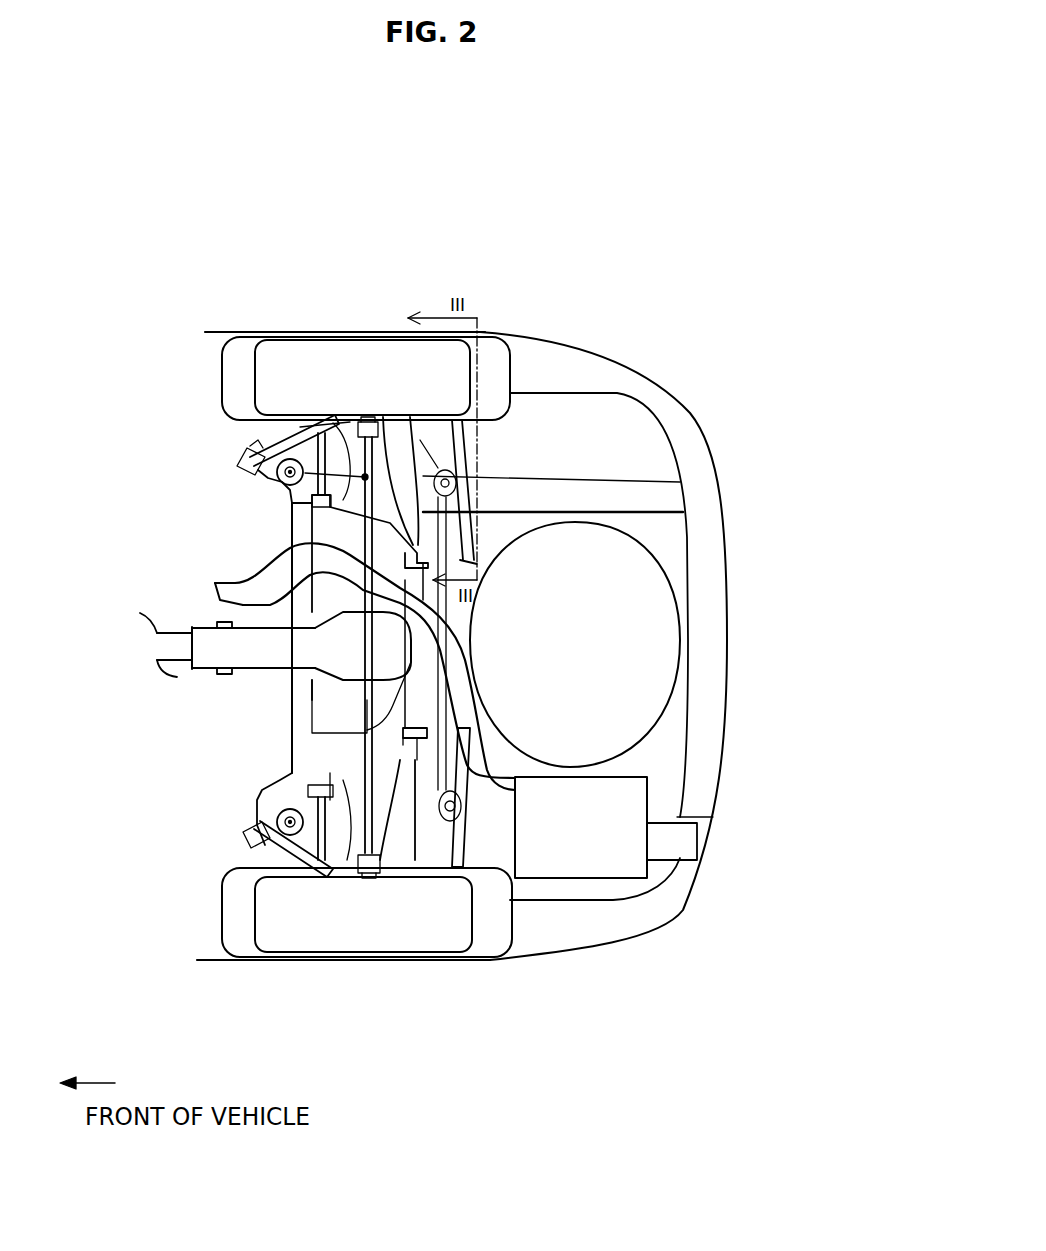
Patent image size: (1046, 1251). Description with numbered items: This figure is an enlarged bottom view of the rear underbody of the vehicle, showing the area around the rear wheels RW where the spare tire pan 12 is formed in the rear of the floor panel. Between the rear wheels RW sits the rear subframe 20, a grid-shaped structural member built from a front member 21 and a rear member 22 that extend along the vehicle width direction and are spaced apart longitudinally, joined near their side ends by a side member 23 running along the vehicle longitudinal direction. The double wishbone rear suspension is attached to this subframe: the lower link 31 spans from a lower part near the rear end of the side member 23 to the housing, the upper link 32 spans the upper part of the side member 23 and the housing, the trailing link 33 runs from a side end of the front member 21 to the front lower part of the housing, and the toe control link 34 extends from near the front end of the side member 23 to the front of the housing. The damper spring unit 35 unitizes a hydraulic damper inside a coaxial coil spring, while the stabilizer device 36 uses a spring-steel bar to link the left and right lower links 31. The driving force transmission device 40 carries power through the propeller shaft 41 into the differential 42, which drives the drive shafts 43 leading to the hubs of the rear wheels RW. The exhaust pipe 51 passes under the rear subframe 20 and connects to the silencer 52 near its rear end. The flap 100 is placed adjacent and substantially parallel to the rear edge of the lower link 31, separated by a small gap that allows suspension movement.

The spare tire pan 12 is at (617, 620).
The rear subframe 20 is at (251, 530).
The front member 21 is at (293, 716).
The rear member 22 is at (420, 648).
The side member 23 is at (352, 546).
The lower link 31 is at (408, 847).
The upper link 32 is at (355, 835).
The trailing link 33 is at (282, 852).
The toe control link 34 is at (318, 815).
The damper spring unit 35 is at (427, 850).
The stabilizer device 36 is at (447, 567).
The driving force transmission device 40 is at (209, 691).
The propeller shaft 41 is at (167, 640).
The differential 42 is at (248, 630).
The drive shaft 43 is at (247, 463).
The exhaust pipe 51 is at (487, 733).
The silencer 52 is at (612, 853).
The flap 100 is at (463, 827).
The rear wheel RW is at (258, 910).